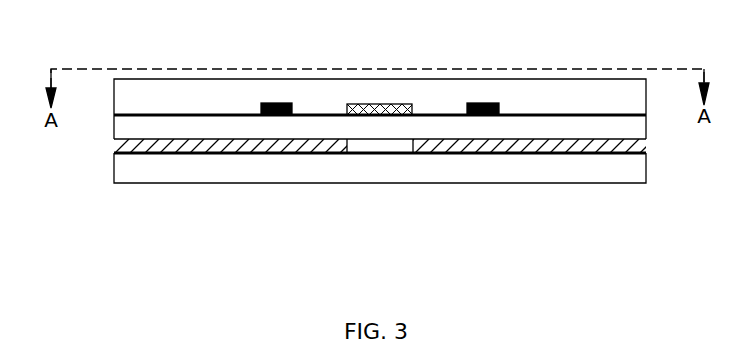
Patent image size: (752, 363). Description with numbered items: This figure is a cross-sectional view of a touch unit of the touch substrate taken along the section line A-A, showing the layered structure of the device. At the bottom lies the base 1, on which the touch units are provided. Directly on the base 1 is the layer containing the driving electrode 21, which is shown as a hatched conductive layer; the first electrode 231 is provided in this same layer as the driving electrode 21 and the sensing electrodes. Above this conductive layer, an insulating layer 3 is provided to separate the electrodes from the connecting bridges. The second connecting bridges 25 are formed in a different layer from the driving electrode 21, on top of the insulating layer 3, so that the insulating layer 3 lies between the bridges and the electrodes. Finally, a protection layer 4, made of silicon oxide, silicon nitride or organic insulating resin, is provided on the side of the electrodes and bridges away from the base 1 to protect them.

The base 1 is at (615, 173).
The insulating layer 3 is at (427, 127).
The protection layer 4 is at (568, 98).
The driving electrode 21 is at (227, 143).
The second connecting bridges 25 is at (282, 102).
The first electrode 231 is at (382, 108).